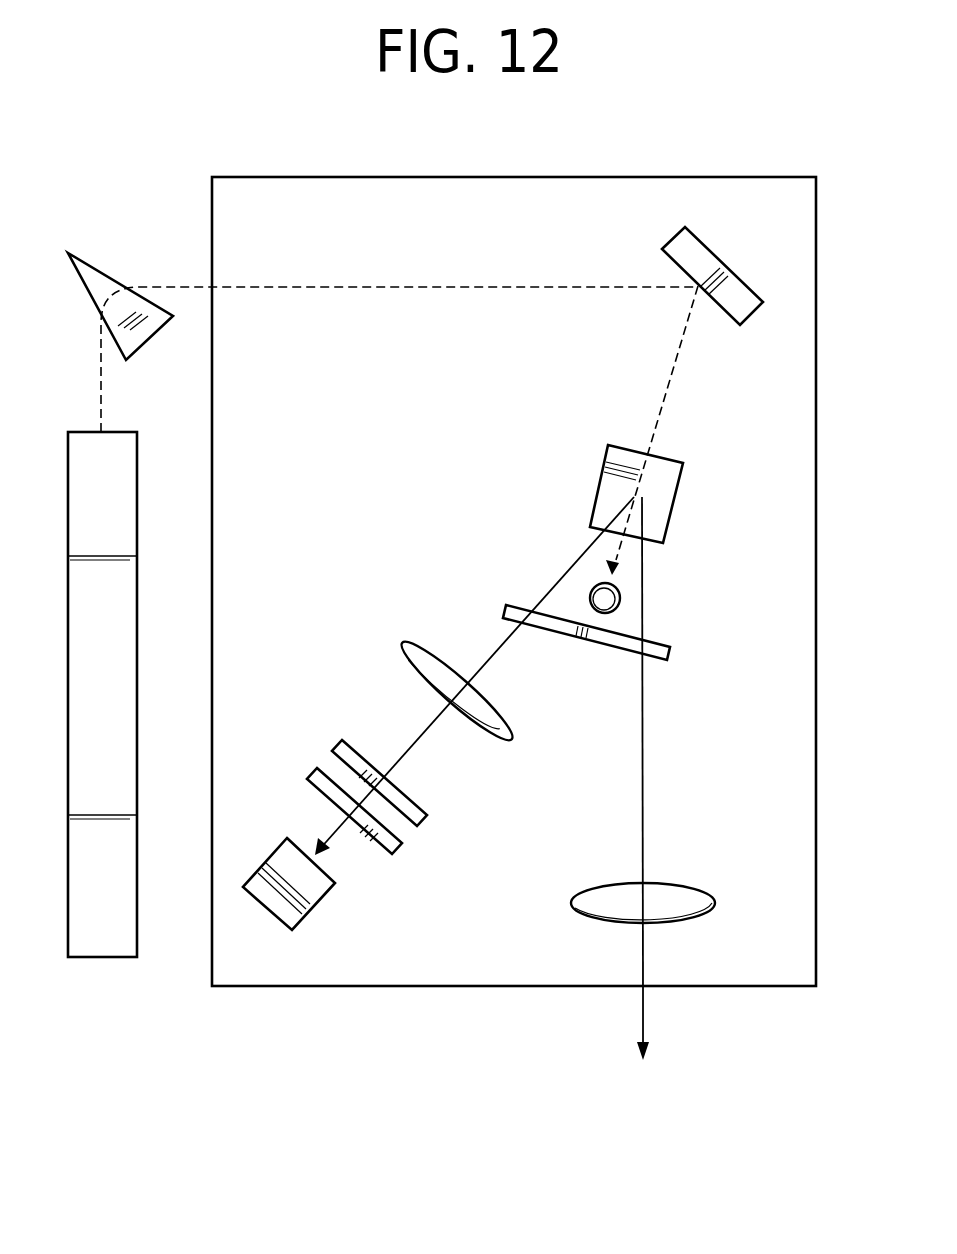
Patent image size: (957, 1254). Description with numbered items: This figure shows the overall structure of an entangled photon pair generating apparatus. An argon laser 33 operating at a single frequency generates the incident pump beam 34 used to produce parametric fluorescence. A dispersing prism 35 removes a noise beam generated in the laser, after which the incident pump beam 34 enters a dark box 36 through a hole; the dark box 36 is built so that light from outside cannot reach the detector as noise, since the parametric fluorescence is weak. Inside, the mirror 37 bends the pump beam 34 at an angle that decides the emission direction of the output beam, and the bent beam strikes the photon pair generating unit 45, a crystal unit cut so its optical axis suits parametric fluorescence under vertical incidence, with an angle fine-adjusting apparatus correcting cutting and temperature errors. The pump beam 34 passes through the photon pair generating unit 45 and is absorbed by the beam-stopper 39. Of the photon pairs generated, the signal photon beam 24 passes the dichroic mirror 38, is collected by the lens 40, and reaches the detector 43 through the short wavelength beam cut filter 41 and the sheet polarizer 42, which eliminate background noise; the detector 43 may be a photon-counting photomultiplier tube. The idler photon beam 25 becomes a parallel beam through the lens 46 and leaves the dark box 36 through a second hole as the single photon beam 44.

The signal photon beam 24 is at (497, 648).
The idler photon beam 25 is at (643, 770).
The argon laser 33 is at (138, 513).
The incident pump beam 34 is at (101, 390).
The dispersing prism 35 is at (107, 270).
The dark box 36 is at (816, 230).
The mirror 37 is at (740, 327).
The dichroic mirror 38 is at (670, 652).
The beam-stopper 39 is at (620, 598).
The lens 40 is at (415, 685).
The short wavelength beam cut filter 41 is at (405, 792).
The sheet polarizer 42 is at (397, 837).
The detector 43 is at (335, 883).
The single photon beam 44 is at (643, 1015).
The photon pair generating unit 45 is at (676, 497).
The lens 46 is at (715, 903).